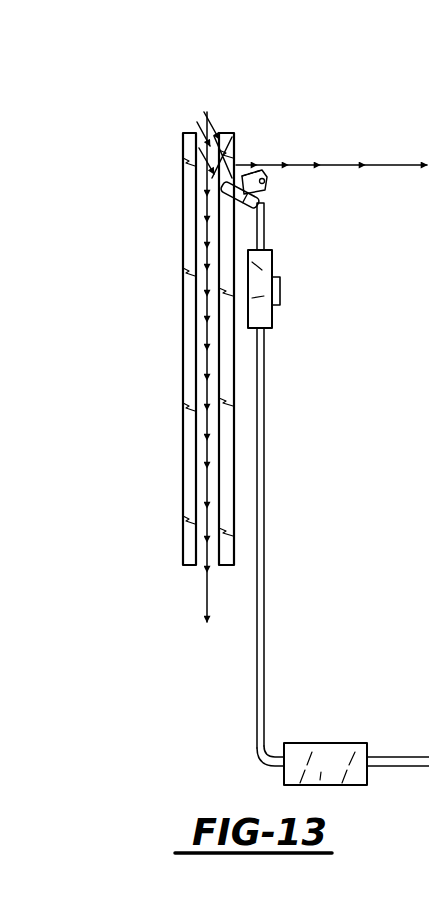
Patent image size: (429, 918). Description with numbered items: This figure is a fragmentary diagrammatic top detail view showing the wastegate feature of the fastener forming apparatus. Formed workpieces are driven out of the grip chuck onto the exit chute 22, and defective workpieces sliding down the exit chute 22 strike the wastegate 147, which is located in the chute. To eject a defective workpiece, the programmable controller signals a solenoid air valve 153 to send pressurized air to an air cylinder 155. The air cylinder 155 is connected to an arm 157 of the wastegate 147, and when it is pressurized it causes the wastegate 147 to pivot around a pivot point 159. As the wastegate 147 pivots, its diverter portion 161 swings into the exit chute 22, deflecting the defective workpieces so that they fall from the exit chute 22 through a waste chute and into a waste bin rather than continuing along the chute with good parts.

The exit chute 22 is at (227, 518).
The wastegate 147 is at (244, 161).
The solenoid air valve 153 is at (325, 757).
The air cylinder 155 is at (273, 265).
The arm 157 is at (268, 194).
The pivot point 159 is at (227, 188).
The diverter portion 161 is at (235, 157).